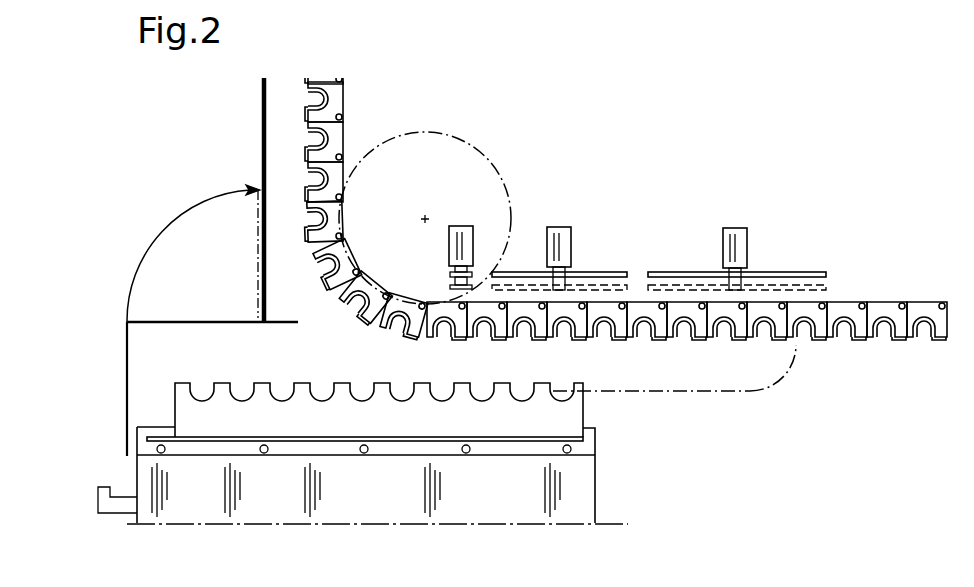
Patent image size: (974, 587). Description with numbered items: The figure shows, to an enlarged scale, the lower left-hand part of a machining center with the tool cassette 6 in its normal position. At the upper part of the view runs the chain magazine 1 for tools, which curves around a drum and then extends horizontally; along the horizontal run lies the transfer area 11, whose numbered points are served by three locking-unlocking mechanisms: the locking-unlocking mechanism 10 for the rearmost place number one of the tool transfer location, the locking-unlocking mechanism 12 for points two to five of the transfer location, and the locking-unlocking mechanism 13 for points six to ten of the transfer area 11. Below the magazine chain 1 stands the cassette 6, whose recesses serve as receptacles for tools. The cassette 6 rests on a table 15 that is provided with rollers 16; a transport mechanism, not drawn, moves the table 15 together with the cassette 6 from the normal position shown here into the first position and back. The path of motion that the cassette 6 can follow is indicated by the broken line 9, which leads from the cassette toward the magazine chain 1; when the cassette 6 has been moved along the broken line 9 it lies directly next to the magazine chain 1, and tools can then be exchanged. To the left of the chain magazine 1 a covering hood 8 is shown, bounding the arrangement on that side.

The chain magazine 1 is at (625, 192).
The tool cassette 6 is at (180, 392).
The covering hood 8 is at (127, 391).
The broken line 9 is at (678, 388).
The locking-unlocking mechanism 10 is at (470, 232).
The transfer area 11 is at (731, 346).
The locking-unlocking mechanism 12 is at (567, 242).
The locking-unlocking mechanism 13 is at (747, 250).
The table 15 is at (393, 452).
The rollers 16 is at (262, 453).